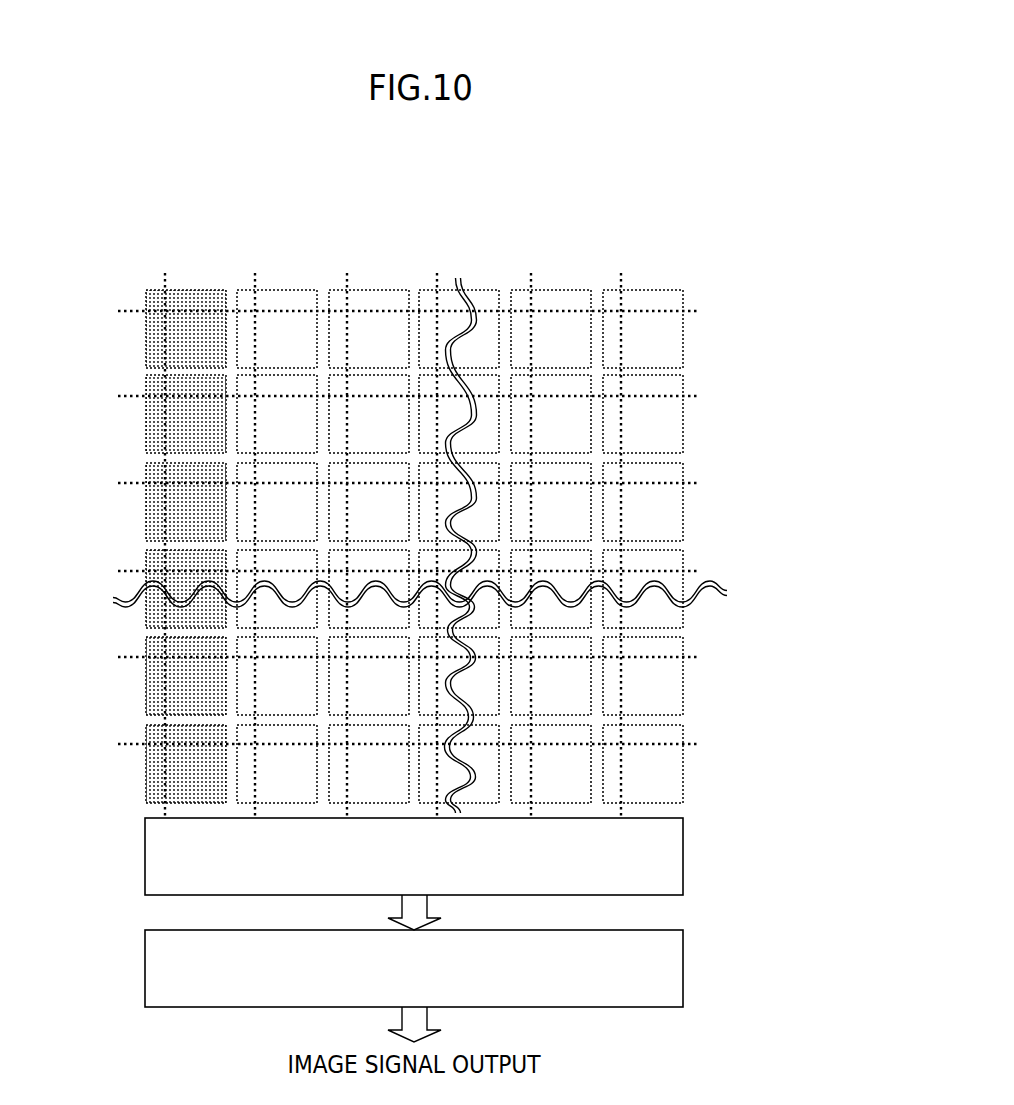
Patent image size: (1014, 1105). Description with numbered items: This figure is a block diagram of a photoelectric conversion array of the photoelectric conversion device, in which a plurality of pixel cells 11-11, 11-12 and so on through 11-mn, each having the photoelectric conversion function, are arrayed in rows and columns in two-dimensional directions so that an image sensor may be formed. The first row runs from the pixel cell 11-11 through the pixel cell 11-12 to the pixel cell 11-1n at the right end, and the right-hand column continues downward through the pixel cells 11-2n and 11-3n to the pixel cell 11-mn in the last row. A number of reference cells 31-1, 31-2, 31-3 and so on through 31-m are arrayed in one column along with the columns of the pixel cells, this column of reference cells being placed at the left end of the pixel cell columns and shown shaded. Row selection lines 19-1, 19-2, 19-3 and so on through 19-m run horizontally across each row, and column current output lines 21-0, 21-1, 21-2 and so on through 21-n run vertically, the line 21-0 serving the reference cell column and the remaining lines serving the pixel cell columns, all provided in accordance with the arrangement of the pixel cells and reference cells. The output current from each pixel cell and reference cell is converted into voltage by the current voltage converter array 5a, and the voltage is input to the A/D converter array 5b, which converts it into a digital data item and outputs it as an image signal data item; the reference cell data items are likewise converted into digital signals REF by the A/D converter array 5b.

The column current output line 21-0 is at (165, 273).
The column current output line 21-1 is at (255, 273).
The column current output line 21-2 is at (347, 273).
The column current output line 21-n is at (621, 273).
The pixel cell 11-11 is at (283, 290).
The pixel cell 11-12 is at (375, 290).
The pixel cell 11-1n is at (686, 332).
The pixel cell 11-2n is at (686, 417).
The pixel cell 11-3n is at (686, 502).
The pixel cell 11-mn is at (686, 762).
The row selection line 19-1 is at (697, 311).
The row selection line 19-2 is at (697, 396).
The row selection line 19-3 is at (697, 483).
The row selection line 19-m is at (697, 744).
The reference cell 31-1 is at (146, 352).
The reference cell 31-2 is at (146, 437).
The reference cell 31-3 is at (146, 520).
The reference cell 31-m is at (146, 779).
The current voltage converter array 5a is at (684, 857).
The A/D converter array 5b is at (684, 967).